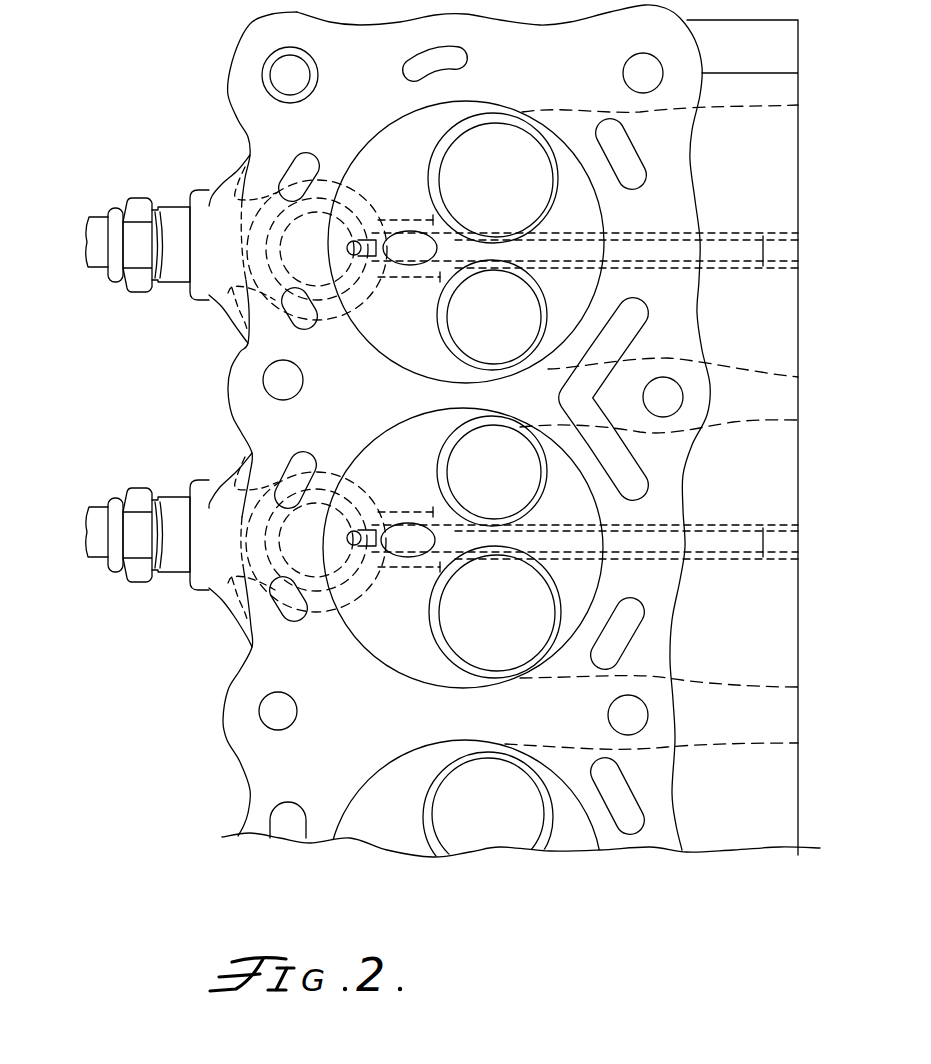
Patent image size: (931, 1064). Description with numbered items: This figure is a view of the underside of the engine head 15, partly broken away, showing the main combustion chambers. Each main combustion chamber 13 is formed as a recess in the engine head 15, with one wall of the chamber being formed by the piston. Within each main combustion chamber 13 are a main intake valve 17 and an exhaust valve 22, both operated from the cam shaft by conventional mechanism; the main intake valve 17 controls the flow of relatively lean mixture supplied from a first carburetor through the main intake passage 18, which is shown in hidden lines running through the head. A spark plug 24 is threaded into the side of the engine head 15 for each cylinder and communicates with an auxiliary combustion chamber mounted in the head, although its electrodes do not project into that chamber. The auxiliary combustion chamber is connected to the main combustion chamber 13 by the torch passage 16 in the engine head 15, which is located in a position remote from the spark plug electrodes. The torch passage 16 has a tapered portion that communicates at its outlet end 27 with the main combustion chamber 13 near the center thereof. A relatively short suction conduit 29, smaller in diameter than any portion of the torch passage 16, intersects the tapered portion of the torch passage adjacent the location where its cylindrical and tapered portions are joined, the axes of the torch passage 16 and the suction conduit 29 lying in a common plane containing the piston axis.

The main combustion chamber 13 is at (410, 171).
The engine head 15 is at (222, 709).
The torch passage 16 is at (378, 222).
The main intake valve 17 is at (506, 171).
The main intake passage 18 is at (736, 110).
The exhaust valve 22 is at (508, 316).
The spark plug 24 is at (96, 219).
The outlet end 27 is at (410, 270).
The suction conduit 29 is at (350, 275).